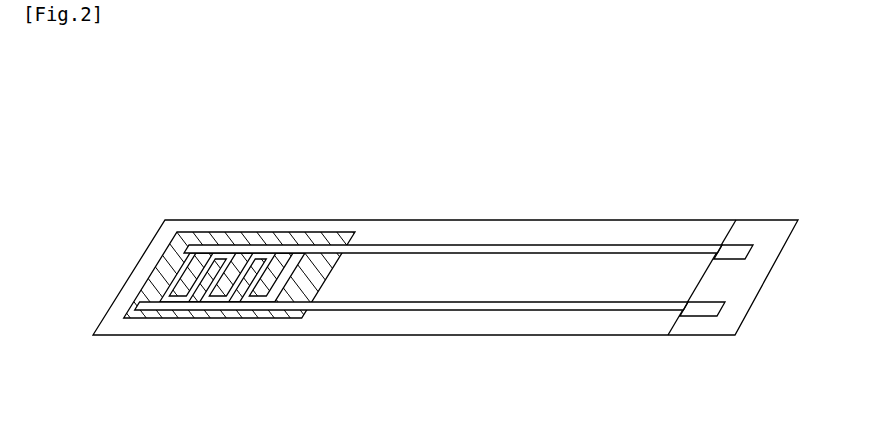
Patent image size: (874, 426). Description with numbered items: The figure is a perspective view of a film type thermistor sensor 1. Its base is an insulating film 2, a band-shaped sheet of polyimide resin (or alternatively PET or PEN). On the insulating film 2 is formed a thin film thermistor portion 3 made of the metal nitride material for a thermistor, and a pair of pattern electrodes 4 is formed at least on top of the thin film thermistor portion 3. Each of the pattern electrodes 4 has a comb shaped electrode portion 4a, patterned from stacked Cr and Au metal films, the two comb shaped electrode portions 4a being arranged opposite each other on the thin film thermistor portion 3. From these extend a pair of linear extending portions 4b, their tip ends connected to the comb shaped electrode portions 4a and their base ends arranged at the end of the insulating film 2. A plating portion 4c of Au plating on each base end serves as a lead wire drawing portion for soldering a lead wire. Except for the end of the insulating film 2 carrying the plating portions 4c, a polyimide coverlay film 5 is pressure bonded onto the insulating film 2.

The film type thermistor sensor 1 is at (645, 150).
The insulating film 2 is at (760, 220).
The thin film thermistor portion 3 is at (280, 232).
The pattern electrodes 4 is at (444, 277).
The comb shaped electrode portions 4a is at (171, 273).
The linear extending portions 4b is at (547, 245).
The plating portion 4c is at (728, 259).
The polyimide coverlay film 5 is at (742, 228).